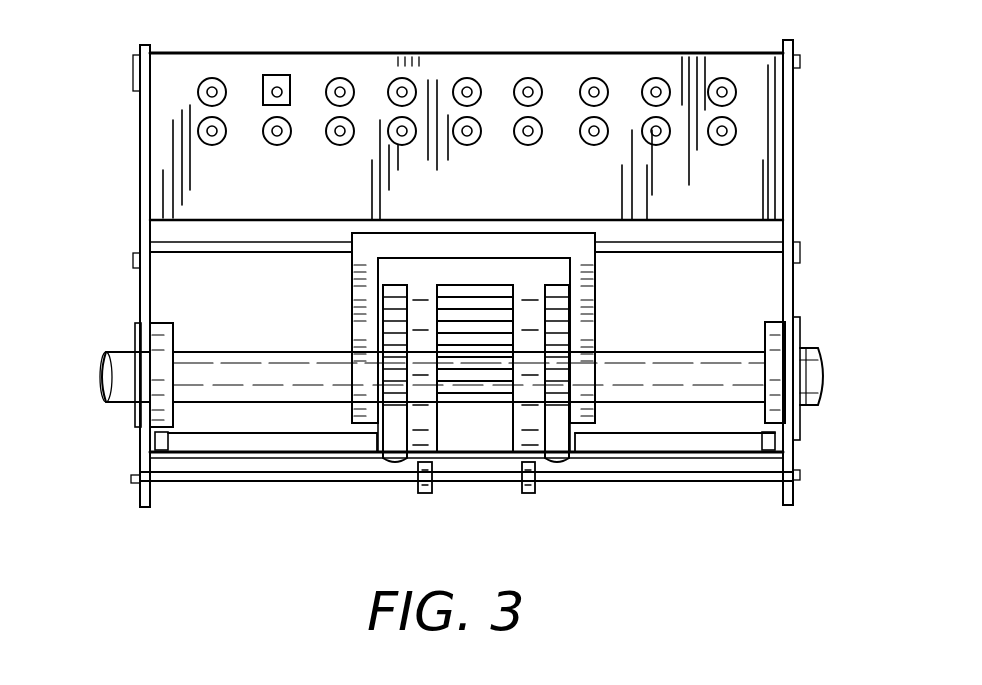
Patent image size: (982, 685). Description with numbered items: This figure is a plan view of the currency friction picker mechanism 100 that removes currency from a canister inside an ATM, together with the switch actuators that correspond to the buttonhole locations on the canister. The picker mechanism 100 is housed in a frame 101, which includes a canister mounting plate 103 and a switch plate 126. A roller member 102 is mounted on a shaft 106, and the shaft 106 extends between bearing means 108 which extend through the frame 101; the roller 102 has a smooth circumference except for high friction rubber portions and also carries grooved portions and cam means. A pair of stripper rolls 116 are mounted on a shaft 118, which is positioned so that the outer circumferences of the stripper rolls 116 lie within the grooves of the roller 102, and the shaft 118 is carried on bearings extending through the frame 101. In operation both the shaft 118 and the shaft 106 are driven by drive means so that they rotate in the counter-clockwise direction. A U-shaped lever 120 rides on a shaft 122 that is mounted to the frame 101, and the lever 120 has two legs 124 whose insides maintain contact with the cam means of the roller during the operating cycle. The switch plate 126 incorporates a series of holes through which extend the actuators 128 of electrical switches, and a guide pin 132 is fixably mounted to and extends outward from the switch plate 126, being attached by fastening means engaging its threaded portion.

The currency friction picker mechanism 100 is at (136, 149).
The frame 101 is at (140, 212).
The roller member 102 is at (477, 282).
The canister mounting plate 103 is at (238, 470).
The shaft 106 is at (650, 350).
The bearing means 108 is at (805, 340).
The stripper rolls 116 is at (424, 494).
The shaft 118 is at (660, 481).
The U-shaped lever 120 is at (352, 300).
The shaft 122 is at (740, 243).
The legs 124 is at (353, 330).
The switch plate 126 is at (756, 145).
The actuators 128 is at (412, 80).
The guide pin 132 is at (278, 75).